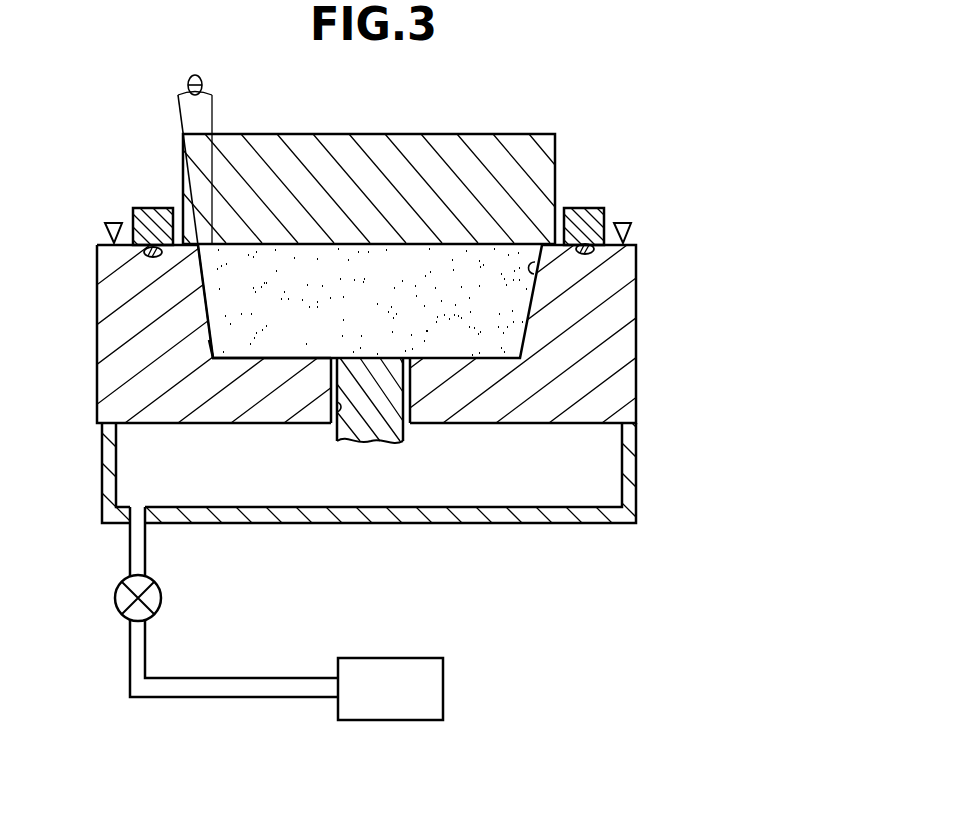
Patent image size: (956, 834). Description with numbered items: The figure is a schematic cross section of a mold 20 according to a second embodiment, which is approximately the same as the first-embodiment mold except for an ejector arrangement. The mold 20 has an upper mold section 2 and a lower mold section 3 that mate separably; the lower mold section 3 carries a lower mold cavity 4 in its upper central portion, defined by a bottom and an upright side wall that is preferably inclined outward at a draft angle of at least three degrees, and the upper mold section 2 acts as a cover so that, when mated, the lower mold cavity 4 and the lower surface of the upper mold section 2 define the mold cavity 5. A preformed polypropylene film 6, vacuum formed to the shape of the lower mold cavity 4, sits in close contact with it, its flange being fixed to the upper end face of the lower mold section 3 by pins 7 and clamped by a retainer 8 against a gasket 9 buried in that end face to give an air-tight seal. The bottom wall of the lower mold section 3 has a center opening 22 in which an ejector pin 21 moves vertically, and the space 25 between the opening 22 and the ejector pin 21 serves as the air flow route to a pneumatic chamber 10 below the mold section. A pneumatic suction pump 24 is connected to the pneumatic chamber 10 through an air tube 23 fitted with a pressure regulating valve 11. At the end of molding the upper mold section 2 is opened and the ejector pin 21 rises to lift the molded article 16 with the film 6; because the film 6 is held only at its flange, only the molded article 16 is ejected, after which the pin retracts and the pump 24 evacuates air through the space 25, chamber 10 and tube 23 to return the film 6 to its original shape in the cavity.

The mold 20 is at (395, 209).
The upper mold section 2 is at (543, 150).
The lower mold section 3 is at (622, 308).
The lower mold cavity 4 is at (503, 333).
The mold cavity 5 is at (533, 277).
The film 6 is at (218, 365).
The pins 7 is at (628, 226).
The retainer 8 is at (590, 215).
The gasket 9 is at (148, 262).
The pneumatic chamber 10 is at (597, 474).
The pressure regulating valve 11 is at (125, 618).
The molded article 16 is at (267, 343).
The ejector pin 21 is at (404, 440).
The center opening 22 is at (335, 414).
The air tube 23 is at (240, 697).
The pneumatic suction pump 24 is at (435, 683).
The space 25 is at (410, 398).